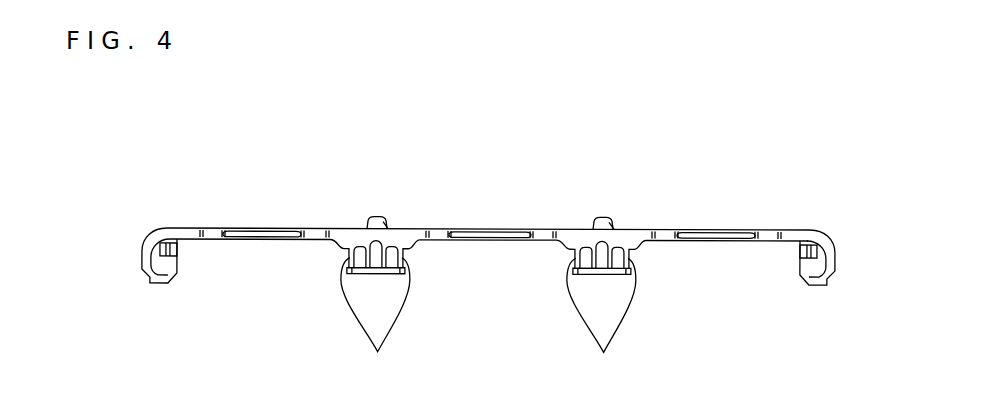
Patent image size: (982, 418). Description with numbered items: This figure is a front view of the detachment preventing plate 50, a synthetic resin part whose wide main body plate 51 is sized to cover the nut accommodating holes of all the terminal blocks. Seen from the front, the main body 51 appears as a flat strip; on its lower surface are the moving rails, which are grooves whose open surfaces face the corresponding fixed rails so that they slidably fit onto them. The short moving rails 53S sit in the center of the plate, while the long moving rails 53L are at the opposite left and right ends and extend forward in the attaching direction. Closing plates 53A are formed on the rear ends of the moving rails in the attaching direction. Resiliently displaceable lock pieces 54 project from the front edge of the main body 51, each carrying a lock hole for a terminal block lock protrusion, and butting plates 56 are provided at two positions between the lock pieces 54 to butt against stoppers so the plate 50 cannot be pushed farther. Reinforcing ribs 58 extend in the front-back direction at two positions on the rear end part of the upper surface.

The detachment preventing plate 50 is at (683, 168).
The main body plate 51 is at (540, 229).
The closing plate 53A is at (326, 229).
The long moving rail 53L is at (173, 252).
The short moving rail 53S is at (488, 314).
The lock piece 54 is at (260, 229).
The butting plate 56 is at (382, 230).
The reinforcing rib 58 is at (373, 217).